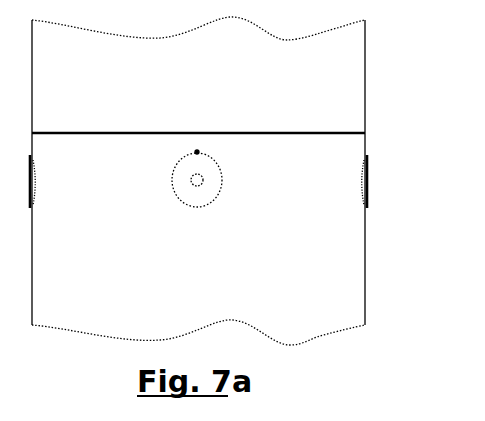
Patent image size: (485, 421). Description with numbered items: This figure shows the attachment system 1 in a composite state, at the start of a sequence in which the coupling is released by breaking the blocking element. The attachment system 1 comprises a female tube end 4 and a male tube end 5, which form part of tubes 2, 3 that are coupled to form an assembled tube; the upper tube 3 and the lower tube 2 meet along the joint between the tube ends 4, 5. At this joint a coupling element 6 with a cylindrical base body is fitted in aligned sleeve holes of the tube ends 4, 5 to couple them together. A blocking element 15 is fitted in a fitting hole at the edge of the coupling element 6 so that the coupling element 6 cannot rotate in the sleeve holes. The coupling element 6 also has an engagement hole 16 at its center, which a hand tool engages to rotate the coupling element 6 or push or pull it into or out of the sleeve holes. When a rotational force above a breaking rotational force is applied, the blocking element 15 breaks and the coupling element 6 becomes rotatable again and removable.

The attachment system 1 is at (251, 172).
The tube 2 is at (332, 283).
The tube 3 is at (333, 55).
The female tube end 4 is at (376, 262).
The male tube end 5 is at (370, 107).
The coupling element 6 is at (218, 187).
The blocking element 15 is at (198, 152).
The engagement hole 16 is at (200, 180).